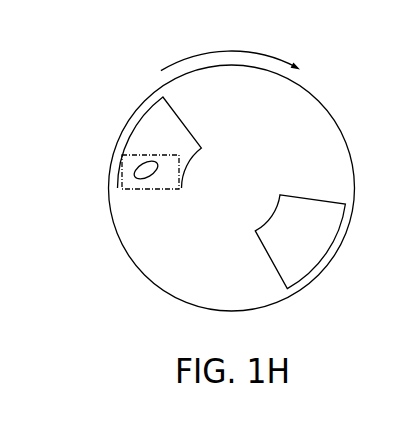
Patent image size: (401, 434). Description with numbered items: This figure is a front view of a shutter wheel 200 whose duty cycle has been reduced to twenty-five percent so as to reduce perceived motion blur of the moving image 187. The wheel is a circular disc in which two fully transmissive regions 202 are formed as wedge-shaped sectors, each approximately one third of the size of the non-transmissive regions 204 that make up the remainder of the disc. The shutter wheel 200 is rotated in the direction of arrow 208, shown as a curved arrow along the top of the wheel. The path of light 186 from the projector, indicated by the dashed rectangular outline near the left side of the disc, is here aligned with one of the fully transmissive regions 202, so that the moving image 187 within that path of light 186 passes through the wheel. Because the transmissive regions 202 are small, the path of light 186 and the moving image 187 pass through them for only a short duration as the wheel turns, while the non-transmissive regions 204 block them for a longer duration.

The shutter wheel 200 is at (144, 293).
The 100% transmissive region 202 is at (152, 125).
The 0% transmissive region 204 is at (293, 107).
The arrow 208 is at (222, 51).
The path of light 186 is at (135, 158).
The moving image 187 is at (155, 180).